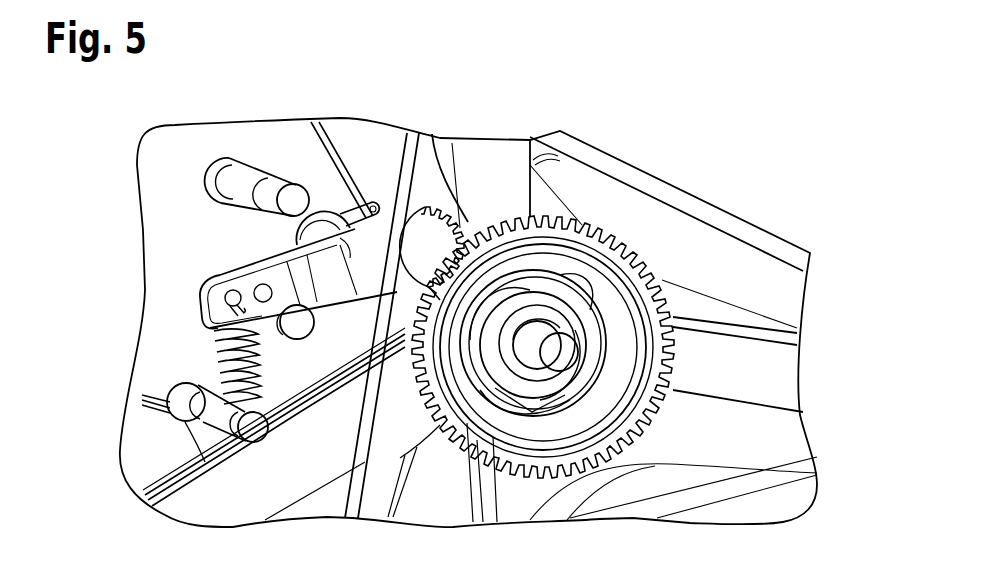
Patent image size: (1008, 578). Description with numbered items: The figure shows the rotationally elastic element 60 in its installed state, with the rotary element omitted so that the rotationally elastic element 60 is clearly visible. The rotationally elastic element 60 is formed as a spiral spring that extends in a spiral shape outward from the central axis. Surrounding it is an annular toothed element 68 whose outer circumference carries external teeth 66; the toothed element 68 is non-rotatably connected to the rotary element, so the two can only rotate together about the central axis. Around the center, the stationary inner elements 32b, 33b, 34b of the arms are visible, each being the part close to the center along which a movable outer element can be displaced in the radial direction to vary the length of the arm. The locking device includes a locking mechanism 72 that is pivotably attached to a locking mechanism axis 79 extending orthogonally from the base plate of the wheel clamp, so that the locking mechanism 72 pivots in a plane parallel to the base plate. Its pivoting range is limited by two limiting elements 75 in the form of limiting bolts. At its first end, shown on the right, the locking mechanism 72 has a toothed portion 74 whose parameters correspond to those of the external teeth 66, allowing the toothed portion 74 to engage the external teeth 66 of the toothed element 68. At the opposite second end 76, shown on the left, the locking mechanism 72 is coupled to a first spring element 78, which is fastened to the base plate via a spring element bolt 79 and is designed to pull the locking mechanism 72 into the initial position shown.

The inner element 32b is at (493, 177).
The inner element 33b is at (190, 472).
The inner element 34b is at (763, 363).
The rotationally elastic element 60 is at (564, 275).
The external teeth 66 is at (593, 290).
The toothed element 68 is at (553, 235).
The locking mechanism 72 is at (219, 191).
The toothed portion 74 is at (441, 132).
The limiting element 75 is at (250, 178).
The second end 76 is at (215, 283).
The first spring element 78 is at (211, 370).
The locking mechanism axis 79 is at (398, 160).